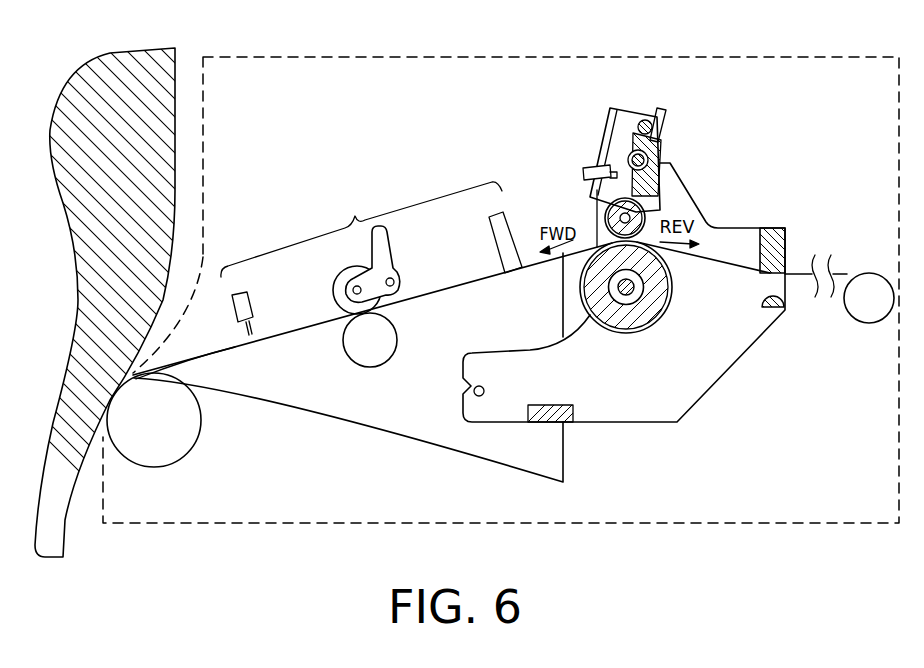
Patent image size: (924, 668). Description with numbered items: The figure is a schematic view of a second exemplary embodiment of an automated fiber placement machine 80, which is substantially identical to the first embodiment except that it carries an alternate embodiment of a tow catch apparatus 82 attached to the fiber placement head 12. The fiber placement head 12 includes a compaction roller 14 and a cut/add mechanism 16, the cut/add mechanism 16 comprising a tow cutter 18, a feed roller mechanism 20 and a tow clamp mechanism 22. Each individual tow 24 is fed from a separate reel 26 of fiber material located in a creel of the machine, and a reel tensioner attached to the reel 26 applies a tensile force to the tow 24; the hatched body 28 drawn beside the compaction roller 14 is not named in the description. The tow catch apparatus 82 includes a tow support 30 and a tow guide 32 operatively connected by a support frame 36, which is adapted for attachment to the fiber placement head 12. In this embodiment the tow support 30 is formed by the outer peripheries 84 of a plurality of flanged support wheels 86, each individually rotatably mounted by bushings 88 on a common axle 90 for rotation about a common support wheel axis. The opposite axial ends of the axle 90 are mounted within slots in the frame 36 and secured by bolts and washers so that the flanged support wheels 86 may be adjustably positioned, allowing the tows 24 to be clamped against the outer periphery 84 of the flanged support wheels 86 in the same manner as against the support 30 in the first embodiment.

The fiber placement head 12 is at (362, 450).
The compaction roller 14 is at (192, 432).
The cut/add mechanism 16 is at (361, 229).
The tow cutter 18 is at (248, 300).
The feed roller mechanism 20 is at (340, 295).
The tow clamp mechanism 22 is at (505, 227).
The tow 24 is at (847, 272).
The reel 26 is at (877, 322).
The platen body 28 is at (170, 173).
The tow support 30 is at (682, 265).
The tow guide 32 is at (778, 248).
The support frame 36 is at (610, 407).
The automated fiber placement machine 80 is at (800, 55).
The tow catch apparatus 82 is at (728, 212).
The outer periphery 84 is at (673, 290).
The flanged support wheel 86 is at (627, 318).
The bushing 88 is at (613, 305).
The axle 90 is at (638, 290).